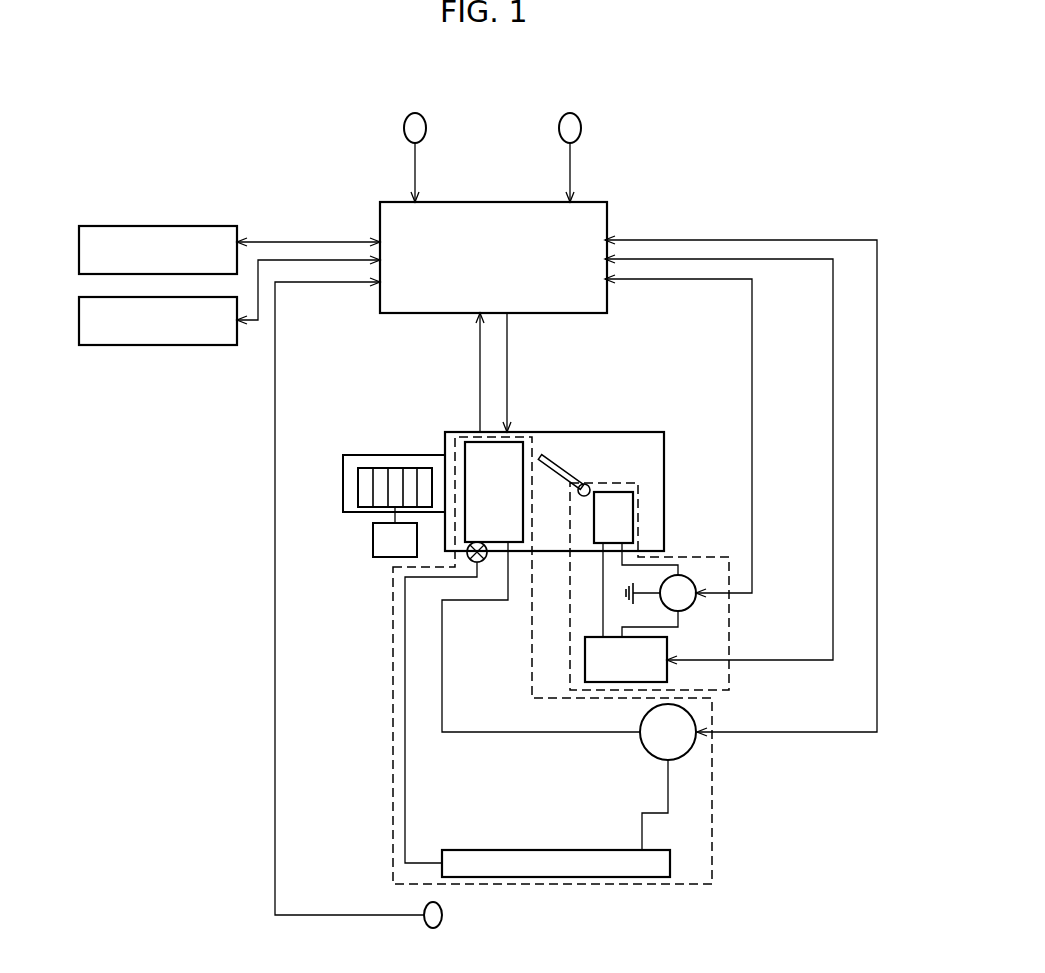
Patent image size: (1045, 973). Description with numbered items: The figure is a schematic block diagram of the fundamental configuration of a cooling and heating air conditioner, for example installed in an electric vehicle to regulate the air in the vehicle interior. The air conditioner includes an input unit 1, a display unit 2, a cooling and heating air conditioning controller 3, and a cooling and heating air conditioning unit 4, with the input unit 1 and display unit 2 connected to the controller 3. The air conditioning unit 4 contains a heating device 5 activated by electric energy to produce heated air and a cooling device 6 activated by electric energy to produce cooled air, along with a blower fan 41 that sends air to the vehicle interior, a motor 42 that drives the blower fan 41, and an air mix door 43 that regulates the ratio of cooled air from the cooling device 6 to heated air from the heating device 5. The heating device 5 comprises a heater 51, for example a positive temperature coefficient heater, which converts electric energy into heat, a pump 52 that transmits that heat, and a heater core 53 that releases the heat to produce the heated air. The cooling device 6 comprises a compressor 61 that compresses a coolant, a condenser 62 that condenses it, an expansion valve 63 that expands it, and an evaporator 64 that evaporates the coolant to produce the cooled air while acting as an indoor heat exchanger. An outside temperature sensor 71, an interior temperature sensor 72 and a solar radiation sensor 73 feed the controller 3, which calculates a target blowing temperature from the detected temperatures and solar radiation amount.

The input unit 1 is at (158, 226).
The display unit 2 is at (157, 345).
The cooling and heating air conditioning controller 3 is at (494, 202).
The cooling and heating air conditioning unit 4 is at (460, 432).
The blower fan 41 is at (358, 484).
The motor 42 is at (373, 540).
The air mix door 43 is at (566, 457).
The heating device 5 is at (731, 633).
The heater 51 is at (585, 662).
The pump 52 is at (692, 578).
The heater core 53 is at (633, 516).
The cooling device 6 is at (712, 850).
The compressor 61 is at (648, 757).
The condenser 62 is at (548, 877).
The expansion valve 63 is at (477, 563).
The evaporator 64 is at (516, 440).
The outside temperature sensor 71 is at (442, 917).
The interior temperature sensor 72 is at (404, 128).
The solar radiation sensor 73 is at (581, 128).